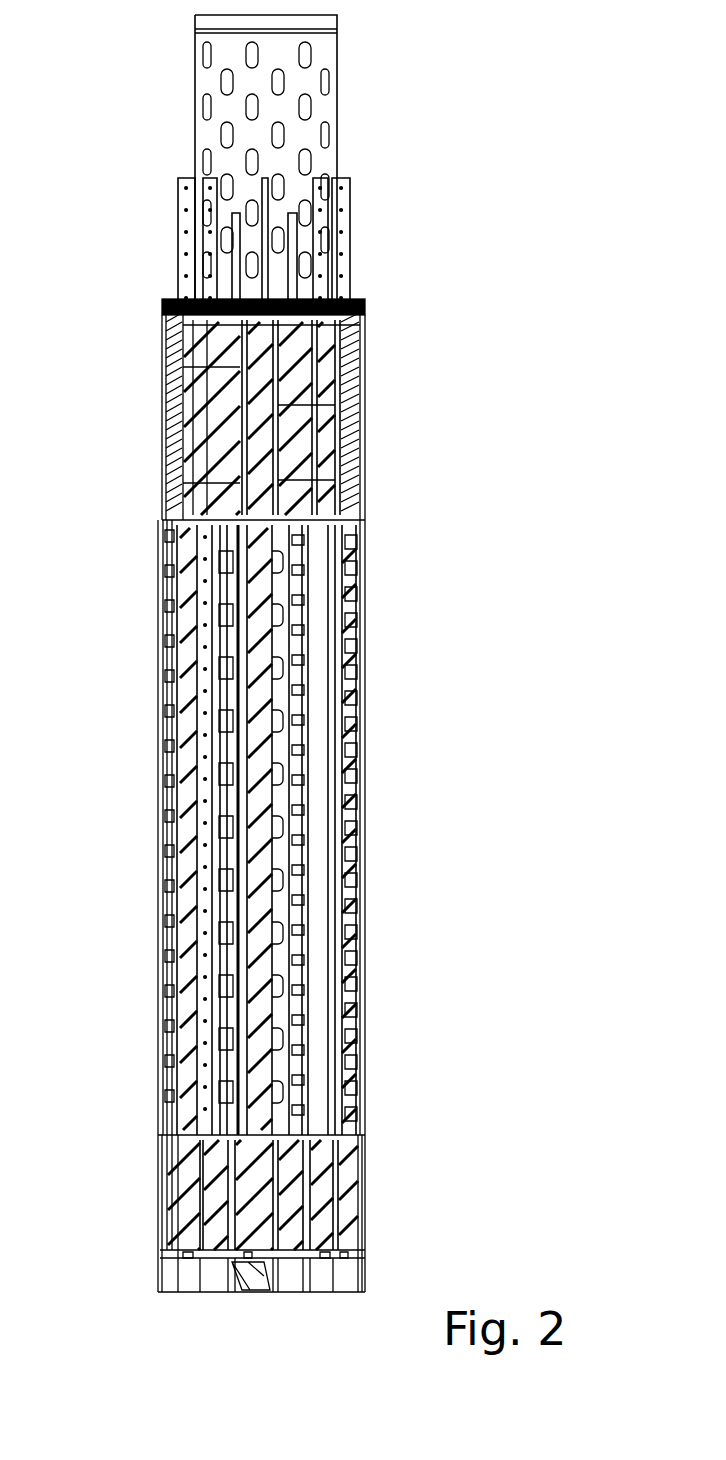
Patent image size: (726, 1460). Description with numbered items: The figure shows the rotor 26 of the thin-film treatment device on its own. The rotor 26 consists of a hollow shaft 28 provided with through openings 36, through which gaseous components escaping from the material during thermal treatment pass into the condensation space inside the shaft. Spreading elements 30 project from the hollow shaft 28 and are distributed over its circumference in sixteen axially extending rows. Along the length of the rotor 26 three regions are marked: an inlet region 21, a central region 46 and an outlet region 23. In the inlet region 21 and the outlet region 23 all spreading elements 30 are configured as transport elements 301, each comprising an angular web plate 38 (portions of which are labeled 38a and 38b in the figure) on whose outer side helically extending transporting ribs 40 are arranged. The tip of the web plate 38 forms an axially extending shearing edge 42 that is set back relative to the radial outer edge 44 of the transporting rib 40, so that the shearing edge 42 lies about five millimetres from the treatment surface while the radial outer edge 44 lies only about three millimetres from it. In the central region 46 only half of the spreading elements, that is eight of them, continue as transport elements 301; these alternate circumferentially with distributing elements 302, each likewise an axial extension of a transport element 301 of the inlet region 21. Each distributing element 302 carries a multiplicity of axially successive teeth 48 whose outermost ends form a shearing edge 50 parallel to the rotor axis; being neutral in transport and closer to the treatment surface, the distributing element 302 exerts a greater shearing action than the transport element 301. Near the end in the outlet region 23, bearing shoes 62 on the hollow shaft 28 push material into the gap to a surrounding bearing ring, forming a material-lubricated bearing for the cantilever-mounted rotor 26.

The rotor 26 is at (460, 214).
The hollow shaft 28 is at (320, 163).
The through openings 36 is at (307, 108).
The spreading elements 30 is at (318, 1173).
The transport elements 301 is at (403, 512).
The distributing element 302 is at (347, 615).
The shearing edge 42 is at (363, 342).
The inlet region 21 is at (141, 308).
The transporting ribs 40 is at (363, 452).
The web plate 38 is at (263, 402).
The first shaft portion 38a is at (247, 835).
The second shaft portion 38b is at (262, 852).
The radial outer edge 44 is at (327, 402).
The central region 46 is at (142, 530).
The teeth 48 is at (347, 665).
The shearing edge 50 is at (358, 712).
The outlet region 23 is at (142, 1291).
The bearing shoes 62 is at (228, 1285).